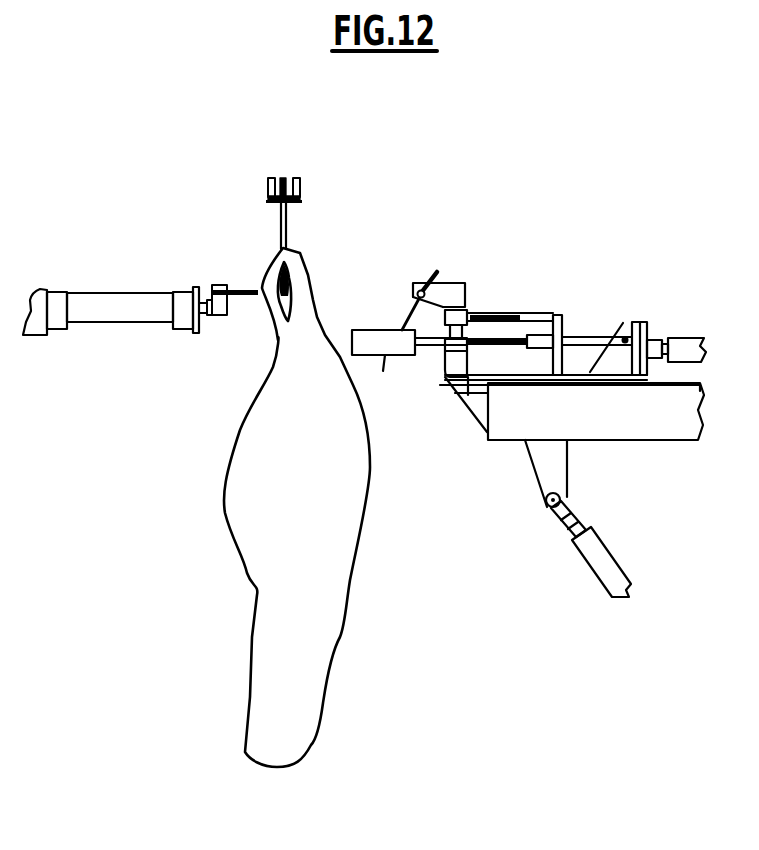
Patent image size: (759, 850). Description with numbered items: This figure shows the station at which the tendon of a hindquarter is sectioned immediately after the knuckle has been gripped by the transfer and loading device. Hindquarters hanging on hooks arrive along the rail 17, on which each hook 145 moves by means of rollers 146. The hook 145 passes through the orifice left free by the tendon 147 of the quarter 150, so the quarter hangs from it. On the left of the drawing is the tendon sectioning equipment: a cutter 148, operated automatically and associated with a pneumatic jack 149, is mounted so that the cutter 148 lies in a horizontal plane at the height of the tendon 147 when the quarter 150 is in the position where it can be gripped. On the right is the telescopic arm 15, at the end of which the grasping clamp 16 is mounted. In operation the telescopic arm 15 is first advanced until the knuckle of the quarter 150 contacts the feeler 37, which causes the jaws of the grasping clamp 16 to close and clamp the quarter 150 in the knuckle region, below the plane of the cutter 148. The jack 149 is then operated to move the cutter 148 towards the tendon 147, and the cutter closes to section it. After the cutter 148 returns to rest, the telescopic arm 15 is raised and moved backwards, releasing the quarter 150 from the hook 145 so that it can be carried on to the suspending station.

The telescopic arm 15 is at (527, 278).
The grasping clamp 16 is at (371, 338).
The rail 17 is at (272, 200).
The feeler 37 is at (383, 371).
The hook 145 is at (288, 223).
The rollers 146 is at (299, 180).
The tendon 147 is at (272, 302).
The cutter 148 is at (243, 288).
The pneumatic jack 149 is at (131, 303).
The quarter 150 is at (252, 508).